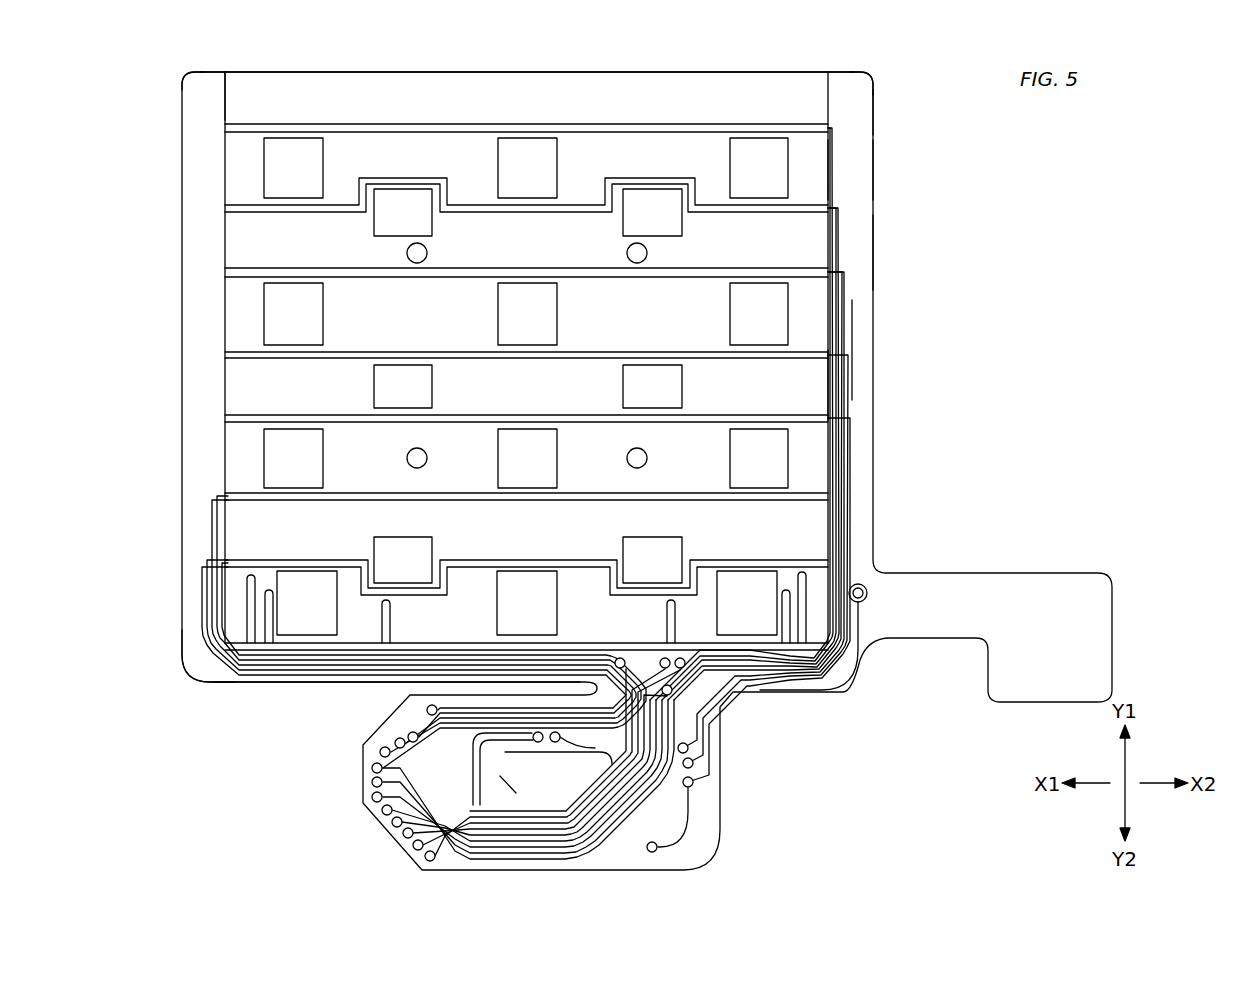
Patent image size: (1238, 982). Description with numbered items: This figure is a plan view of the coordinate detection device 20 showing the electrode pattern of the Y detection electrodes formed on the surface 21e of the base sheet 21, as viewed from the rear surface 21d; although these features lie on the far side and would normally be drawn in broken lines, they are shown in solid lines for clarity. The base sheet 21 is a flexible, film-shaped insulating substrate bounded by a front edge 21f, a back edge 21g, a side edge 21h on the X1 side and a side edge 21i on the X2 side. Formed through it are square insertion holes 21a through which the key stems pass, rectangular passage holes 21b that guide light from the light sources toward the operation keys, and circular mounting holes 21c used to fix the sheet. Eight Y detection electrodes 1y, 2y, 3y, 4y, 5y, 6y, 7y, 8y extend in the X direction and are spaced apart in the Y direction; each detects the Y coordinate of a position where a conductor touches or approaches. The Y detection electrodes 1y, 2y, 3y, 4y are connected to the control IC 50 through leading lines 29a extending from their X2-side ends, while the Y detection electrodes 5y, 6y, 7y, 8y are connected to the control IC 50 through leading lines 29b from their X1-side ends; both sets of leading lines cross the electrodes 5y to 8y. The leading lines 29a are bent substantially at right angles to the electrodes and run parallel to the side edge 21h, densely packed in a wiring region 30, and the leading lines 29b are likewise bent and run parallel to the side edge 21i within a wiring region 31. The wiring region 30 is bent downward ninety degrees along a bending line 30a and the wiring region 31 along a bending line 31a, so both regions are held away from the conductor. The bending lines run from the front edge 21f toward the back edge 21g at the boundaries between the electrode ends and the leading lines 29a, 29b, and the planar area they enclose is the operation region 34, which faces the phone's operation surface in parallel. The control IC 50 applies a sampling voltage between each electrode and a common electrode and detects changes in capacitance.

The coordinate detection device 20 is at (872, 71).
The base sheet 21 is at (762, 82).
The insertion holes 21a is at (526, 386).
The passage holes 21b is at (528, 386).
The mounting holes 21c is at (664, 457).
The rear surface 21d is at (858, 248).
The surface 21e is at (858, 345).
The front edge 21f is at (300, 686).
The back edge 21g is at (633, 72).
The side edge 21h is at (190, 72).
The side edge 21i is at (876, 112).
The leading lines 29a is at (214, 662).
The leading lines 29b is at (850, 462).
The wiring region 30 is at (190, 586).
The bending line 30a is at (232, 95).
The wiring region 31 is at (858, 168).
The bending line 31a is at (866, 76).
The operation region 34 is at (805, 383).
The control IC 50 is at (370, 800).
The Y detection electrode 1y is at (240, 630).
The Y detection electrode 2y is at (240, 563).
The Y detection electrode 3y is at (240, 496).
The Y detection electrode 4y is at (240, 418).
The Y detection electrode 5y is at (240, 354).
The Y detection electrode 6y is at (240, 272).
The Y detection electrode 7y is at (240, 207).
The Y detection electrode 8y is at (240, 126).